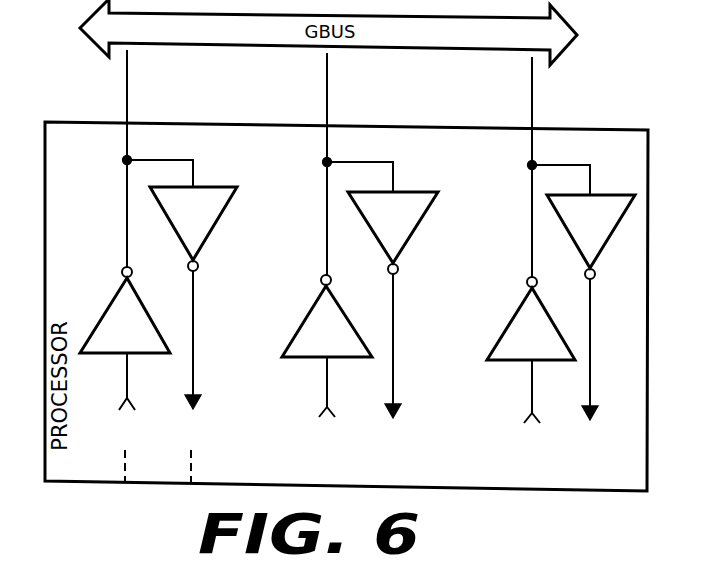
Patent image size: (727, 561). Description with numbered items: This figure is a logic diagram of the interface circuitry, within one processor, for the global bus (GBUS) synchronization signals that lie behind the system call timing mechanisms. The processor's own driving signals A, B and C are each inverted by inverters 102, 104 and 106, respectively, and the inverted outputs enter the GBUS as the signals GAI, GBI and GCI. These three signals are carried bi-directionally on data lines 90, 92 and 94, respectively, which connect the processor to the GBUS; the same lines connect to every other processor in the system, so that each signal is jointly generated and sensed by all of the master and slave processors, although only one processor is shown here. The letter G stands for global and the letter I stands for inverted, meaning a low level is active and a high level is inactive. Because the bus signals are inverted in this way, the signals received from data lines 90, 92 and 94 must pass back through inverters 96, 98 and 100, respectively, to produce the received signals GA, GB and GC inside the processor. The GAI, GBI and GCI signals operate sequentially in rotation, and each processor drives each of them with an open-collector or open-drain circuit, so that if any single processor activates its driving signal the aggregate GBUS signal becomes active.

The data line 90 is at (127, 105).
The data line 92 is at (327, 110).
The data line 94 is at (532, 113).
The inverter 96 is at (180, 219).
The inverter 98 is at (382, 221).
The inverter 100 is at (573, 225).
The inverter 102 is at (108, 343).
The inverter 104 is at (311, 348).
The inverter 106 is at (515, 350).